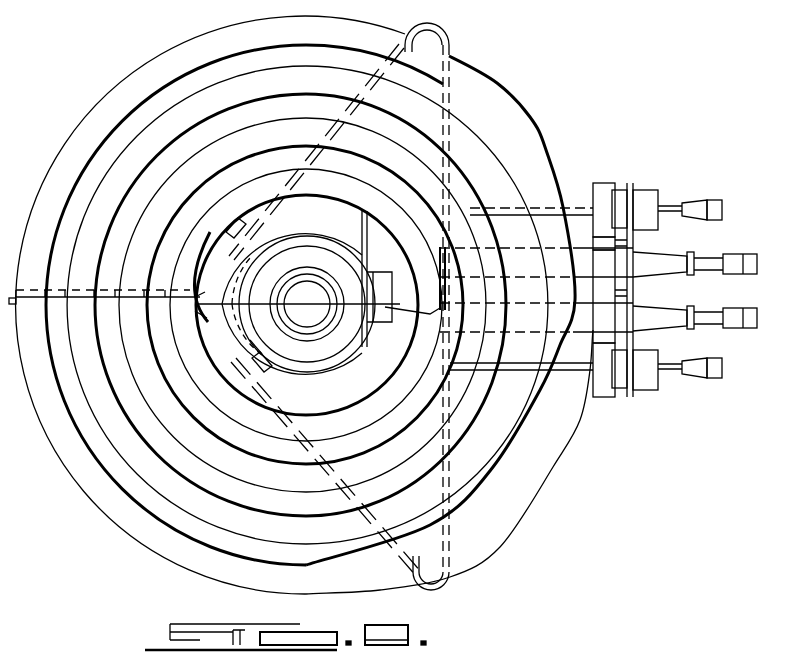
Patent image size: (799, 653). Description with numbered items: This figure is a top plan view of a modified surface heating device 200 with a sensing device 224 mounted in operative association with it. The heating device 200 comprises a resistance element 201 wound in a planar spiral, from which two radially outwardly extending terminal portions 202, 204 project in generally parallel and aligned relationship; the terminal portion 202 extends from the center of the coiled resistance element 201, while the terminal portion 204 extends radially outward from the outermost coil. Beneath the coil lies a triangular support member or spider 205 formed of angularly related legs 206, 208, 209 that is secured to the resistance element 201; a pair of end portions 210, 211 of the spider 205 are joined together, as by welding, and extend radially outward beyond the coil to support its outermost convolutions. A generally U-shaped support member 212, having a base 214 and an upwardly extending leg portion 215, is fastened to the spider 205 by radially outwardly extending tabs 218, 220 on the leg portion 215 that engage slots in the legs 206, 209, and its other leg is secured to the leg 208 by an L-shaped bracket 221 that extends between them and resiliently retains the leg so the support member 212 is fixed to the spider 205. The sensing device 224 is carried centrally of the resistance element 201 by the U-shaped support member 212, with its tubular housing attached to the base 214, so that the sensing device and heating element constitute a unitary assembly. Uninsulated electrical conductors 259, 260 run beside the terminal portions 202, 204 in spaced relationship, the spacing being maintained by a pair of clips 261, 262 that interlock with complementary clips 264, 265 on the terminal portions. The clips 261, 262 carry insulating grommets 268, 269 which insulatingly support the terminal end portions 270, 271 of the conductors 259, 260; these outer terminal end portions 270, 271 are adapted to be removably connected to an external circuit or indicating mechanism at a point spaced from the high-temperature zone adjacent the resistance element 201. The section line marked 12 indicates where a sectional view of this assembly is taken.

The section line 12- 12 is at (333, 277).
The surface heating device 200 is at (541, 82).
The resistance element 201 is at (548, 150).
The terminal portion 202 is at (690, 272).
The terminal portion 204 is at (670, 330).
The triangular support member 205 is at (456, 40).
The leg 206 is at (322, 134).
The leg 208 is at (470, 326).
The leg 209 is at (330, 474).
The end portion 210 is at (165, 292).
The end portion 211 is at (170, 300).
The U-shaped support member 212 is at (341, 360).
The base 214 is at (392, 298).
The leg portion 215 is at (258, 252).
The tab 218 is at (226, 227).
The tab 220 is at (258, 366).
The L-shaped bracket 221 is at (396, 322).
The sensing device 224 is at (314, 366).
The electrical conductor 259 is at (512, 380).
The electrical conductor 260 is at (579, 206).
The clip 261 is at (608, 183).
The clip 262 is at (608, 395).
The clip 264 is at (636, 246).
The clip 265 is at (636, 300).
The insulating grommet 268 is at (646, 190).
The insulating grommet 269 is at (653, 392).
The terminal end portion 270 is at (682, 368).
The terminal end portion 271 is at (682, 208).